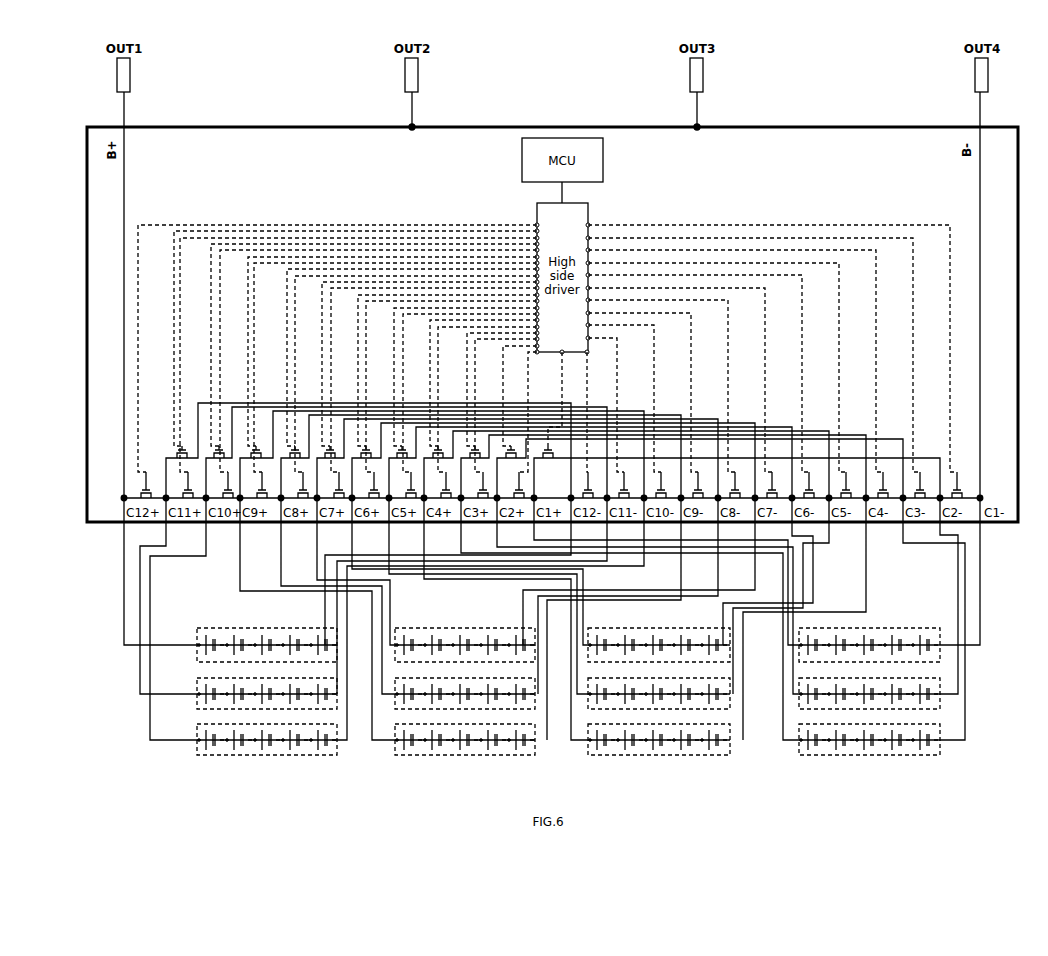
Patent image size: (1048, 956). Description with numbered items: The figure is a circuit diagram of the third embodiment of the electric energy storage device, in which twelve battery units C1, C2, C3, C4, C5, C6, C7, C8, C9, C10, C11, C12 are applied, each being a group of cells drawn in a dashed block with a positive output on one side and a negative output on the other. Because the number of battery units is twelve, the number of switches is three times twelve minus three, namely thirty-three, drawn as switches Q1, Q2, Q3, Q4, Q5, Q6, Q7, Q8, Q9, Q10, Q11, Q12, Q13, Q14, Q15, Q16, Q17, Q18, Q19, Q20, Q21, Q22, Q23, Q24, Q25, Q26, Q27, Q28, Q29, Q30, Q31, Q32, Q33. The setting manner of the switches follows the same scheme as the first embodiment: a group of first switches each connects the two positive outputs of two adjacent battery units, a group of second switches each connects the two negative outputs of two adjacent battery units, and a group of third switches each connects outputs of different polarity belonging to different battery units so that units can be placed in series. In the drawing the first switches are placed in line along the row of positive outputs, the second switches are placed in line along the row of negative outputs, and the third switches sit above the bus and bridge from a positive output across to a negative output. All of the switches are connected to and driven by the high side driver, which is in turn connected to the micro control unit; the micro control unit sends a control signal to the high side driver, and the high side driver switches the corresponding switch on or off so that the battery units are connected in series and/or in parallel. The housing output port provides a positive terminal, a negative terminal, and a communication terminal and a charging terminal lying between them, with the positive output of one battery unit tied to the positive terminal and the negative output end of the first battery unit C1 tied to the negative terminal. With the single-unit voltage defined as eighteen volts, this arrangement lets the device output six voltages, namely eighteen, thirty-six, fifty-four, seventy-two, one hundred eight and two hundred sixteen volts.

The switch Q1 is at (143, 485).
The switch Q2 is at (185, 485).
The switch Q3 is at (225, 485).
The switch Q4 is at (259, 485).
The switch Q5 is at (300, 485).
The switch Q6 is at (336, 485).
The switch Q7 is at (371, 485).
The switch Q8 is at (408, 485).
The switch Q9 is at (443, 485).
The switch Q10 is at (481, 485).
The switch Q11 is at (517, 485).
The switch Q12 is at (586, 485).
The switch Q13 is at (622, 485).
The switch Q14 is at (659, 485).
The switch Q15 is at (696, 485).
The switch Q16 is at (733, 485).
The switch Q17 is at (770, 485).
The switch Q18 is at (807, 485).
The switch Q19 is at (844, 485).
The switch Q20 is at (881, 485).
The switch Q21 is at (918, 485).
The switch Q22 is at (955, 485).
The switch Q23 is at (368, 450).
The switch Q24 is at (406, 452).
The switch Q25 is at (442, 454).
The switch Q26 is at (481, 456).
The switch Q27 is at (517, 458).
The switch Q28 is at (553, 460).
The switch Q29 is at (590, 462).
The switch Q30 is at (626, 464).
The switch Q31 is at (663, 466).
The switch Q32 is at (700, 466).
The switch Q33 is at (737, 466).
The first battery unit C1 is at (940, 637).
The second battery unit C2 is at (940, 708).
The battery unit C3 is at (940, 746).
The battery unit C4 is at (730, 746).
The battery unit C5 is at (730, 706).
The battery unit C6 is at (730, 637).
The battery unit C7 is at (395, 633).
The battery unit C8 is at (395, 701).
The battery unit C9 is at (395, 746).
The battery unit C10 is at (197, 751).
The battery unit C11 is at (200, 706).
The battery unit C12 is at (197, 631).